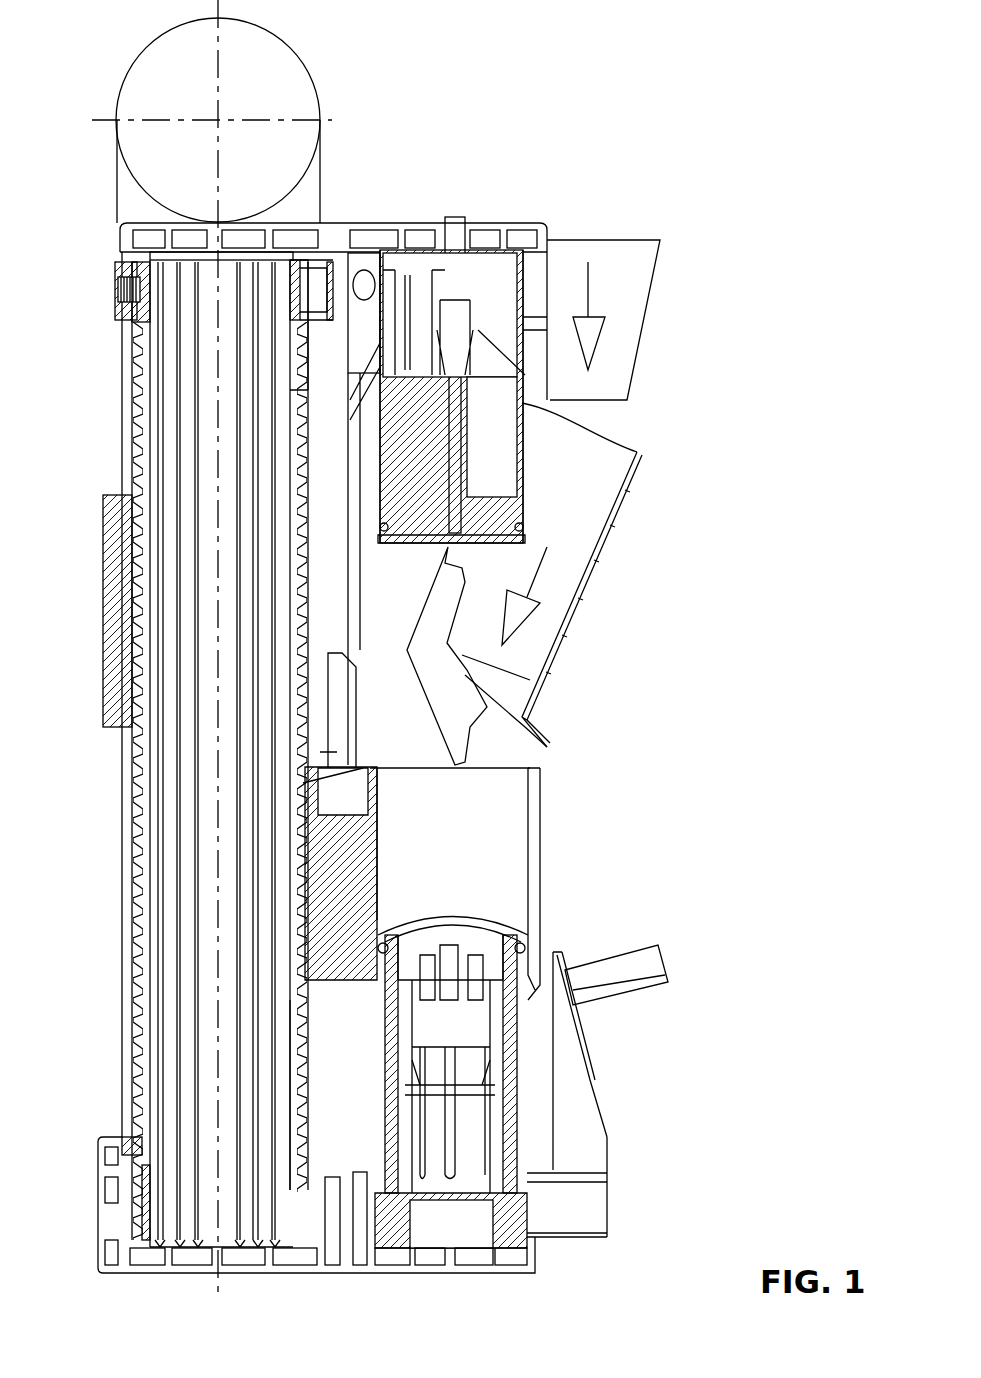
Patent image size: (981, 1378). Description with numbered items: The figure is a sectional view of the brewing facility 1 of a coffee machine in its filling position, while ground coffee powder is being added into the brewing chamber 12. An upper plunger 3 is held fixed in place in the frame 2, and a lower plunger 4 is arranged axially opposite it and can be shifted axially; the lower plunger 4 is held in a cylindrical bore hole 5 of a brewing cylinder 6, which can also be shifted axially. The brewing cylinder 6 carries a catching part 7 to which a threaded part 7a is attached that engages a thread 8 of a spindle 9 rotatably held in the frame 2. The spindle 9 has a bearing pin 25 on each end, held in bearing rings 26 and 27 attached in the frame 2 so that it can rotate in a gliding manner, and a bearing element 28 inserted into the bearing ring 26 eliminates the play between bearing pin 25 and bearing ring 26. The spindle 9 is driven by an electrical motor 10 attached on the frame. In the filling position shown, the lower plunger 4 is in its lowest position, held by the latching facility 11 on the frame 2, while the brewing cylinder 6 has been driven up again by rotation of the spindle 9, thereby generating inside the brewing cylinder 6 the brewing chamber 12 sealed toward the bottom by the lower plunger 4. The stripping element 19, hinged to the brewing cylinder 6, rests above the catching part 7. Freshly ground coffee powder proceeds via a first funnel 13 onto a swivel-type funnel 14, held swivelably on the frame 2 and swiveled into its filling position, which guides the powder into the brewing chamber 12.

The brewing facility 1 is at (631, 668).
The frame 2 is at (372, 237).
The upper plunger 3 is at (497, 437).
The lower plunger 4 is at (492, 1020).
The cylindrical bore hole 5 is at (512, 780).
The brewing cylinder 6 is at (535, 876).
The catching part 7 is at (328, 897).
The threaded part 7a is at (292, 940).
The thread 8 is at (103, 536).
The spindle 9 is at (193, 794).
The electrical motor 10 is at (283, 67).
The latching facility 11 is at (523, 1106).
The brewing chamber 12 is at (501, 883).
The first funnel 13 is at (647, 318).
The swivel-type funnel 14 is at (622, 490).
The stripping element 19 is at (343, 702).
The bearing pin 25 is at (140, 352).
The bearing ring 26 is at (310, 275).
The bearing ring 27 is at (137, 1218).
The bearing element 28 is at (115, 303).